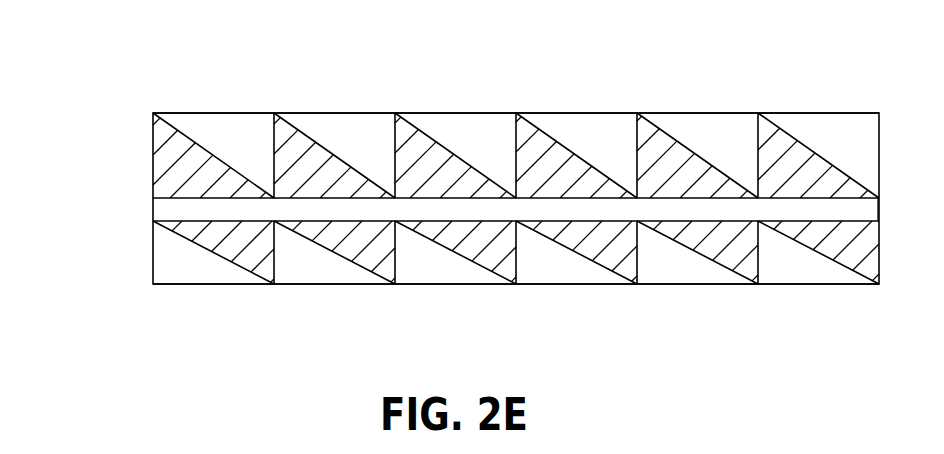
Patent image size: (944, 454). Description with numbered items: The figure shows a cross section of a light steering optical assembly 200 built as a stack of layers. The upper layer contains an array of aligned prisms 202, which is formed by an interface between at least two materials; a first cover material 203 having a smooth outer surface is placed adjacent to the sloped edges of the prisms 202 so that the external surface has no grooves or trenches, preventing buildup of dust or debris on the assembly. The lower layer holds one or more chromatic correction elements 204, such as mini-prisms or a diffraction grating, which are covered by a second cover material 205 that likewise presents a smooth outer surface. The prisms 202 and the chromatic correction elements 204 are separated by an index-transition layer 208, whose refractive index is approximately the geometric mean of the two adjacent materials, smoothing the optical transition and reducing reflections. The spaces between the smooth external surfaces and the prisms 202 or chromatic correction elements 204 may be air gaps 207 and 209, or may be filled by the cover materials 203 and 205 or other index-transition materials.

The optical assembly 200 is at (125, 63).
The array of aligned prisms 202 is at (203, 143).
The first cover material 203 is at (697, 112).
The chromatic correction elements 204 is at (215, 255).
The second cover material 205 is at (697, 285).
The air gap 207 is at (475, 133).
The index-transition layer 208 is at (152, 210).
The air gap 209 is at (457, 267).